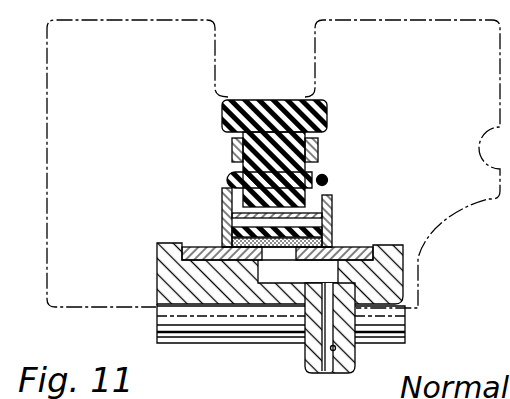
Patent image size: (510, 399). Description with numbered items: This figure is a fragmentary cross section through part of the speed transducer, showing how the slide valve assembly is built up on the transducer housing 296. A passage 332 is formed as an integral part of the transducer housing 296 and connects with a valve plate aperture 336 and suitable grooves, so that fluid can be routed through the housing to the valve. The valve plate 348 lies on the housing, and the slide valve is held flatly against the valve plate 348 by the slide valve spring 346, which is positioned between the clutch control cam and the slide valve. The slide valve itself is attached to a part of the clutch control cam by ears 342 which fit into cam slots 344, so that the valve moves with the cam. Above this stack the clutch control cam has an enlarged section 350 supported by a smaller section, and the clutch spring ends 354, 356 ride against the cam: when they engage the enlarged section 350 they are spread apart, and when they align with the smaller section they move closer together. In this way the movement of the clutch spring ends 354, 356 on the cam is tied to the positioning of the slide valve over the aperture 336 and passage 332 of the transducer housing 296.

The transducer housing 296 is at (402, 277).
The passage 332 is at (336, 349).
The valve plate aperture 336 is at (292, 250).
The ears 342 is at (228, 187).
The cam slots 344 is at (222, 197).
The slide valve spring 346 is at (325, 217).
The valve plate 348 is at (213, 247).
The enlarged section 350 is at (233, 134).
The clutch spring end 354 is at (232, 148).
The clutch spring end 356 is at (318, 147).